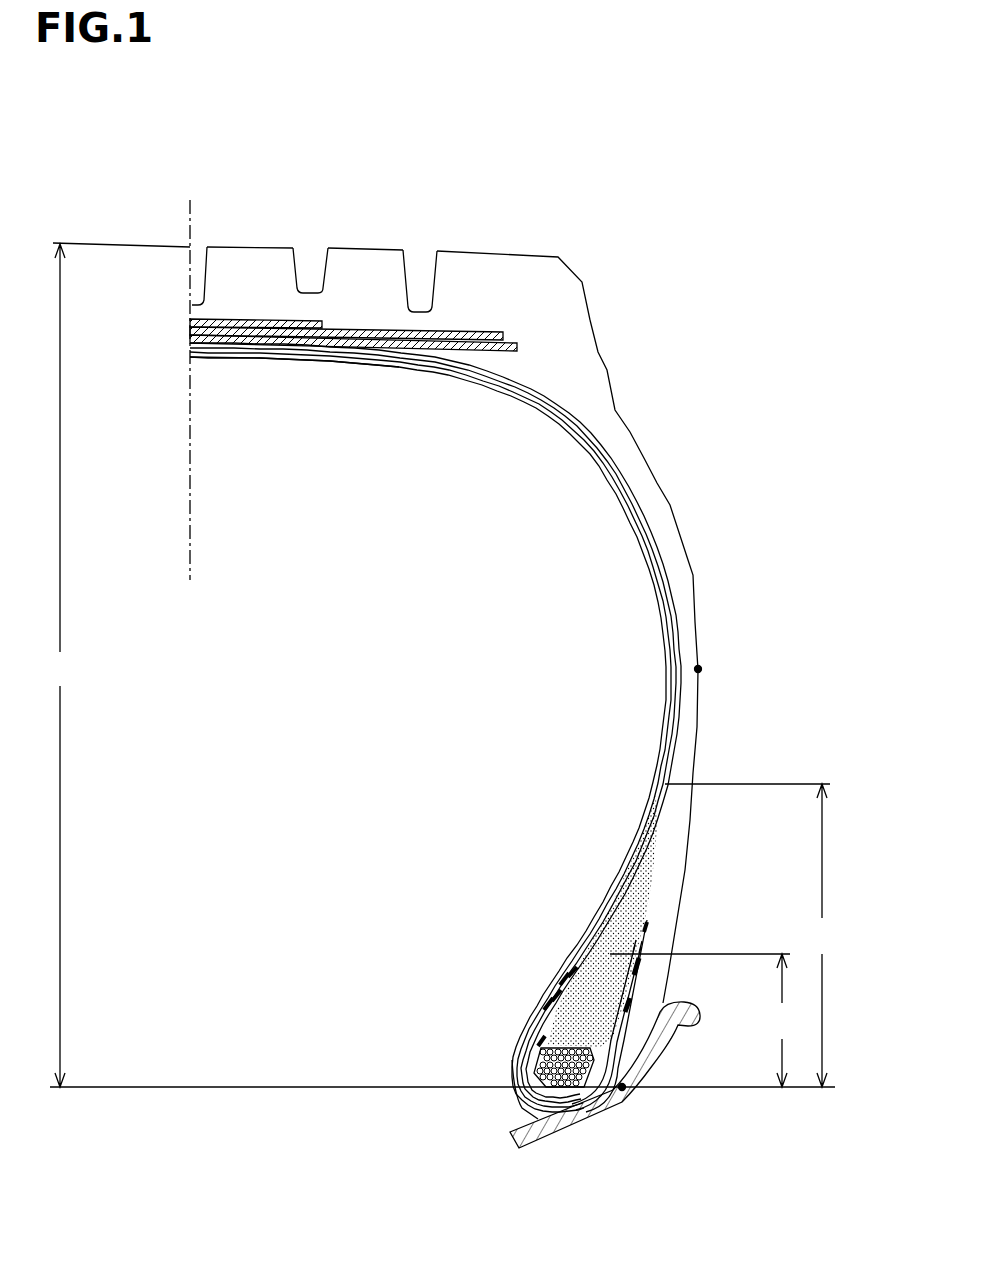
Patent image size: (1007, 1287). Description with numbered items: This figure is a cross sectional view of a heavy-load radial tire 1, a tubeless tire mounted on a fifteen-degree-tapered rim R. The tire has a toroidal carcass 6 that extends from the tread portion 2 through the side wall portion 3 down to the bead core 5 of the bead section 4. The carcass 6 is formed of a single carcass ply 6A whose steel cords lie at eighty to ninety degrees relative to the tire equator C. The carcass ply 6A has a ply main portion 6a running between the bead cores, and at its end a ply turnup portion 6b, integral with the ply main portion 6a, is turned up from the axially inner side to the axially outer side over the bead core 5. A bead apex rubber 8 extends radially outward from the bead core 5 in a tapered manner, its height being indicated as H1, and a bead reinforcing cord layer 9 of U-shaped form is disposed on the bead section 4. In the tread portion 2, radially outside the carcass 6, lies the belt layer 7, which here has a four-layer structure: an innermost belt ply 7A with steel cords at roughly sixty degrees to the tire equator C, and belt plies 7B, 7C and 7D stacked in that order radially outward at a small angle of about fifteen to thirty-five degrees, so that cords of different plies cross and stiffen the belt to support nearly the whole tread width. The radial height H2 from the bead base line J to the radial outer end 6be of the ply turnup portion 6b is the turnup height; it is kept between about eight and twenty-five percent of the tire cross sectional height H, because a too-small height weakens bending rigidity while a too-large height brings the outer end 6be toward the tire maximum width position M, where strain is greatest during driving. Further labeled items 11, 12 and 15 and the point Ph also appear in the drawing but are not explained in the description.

The heavy-load radial tire 1 is at (576, 194).
The tread portion 2 is at (474, 217).
The side wall portion 3 is at (710, 502).
The bead section 4 is at (494, 1062).
The bead core 5 is at (545, 1050).
The carcass 6 is at (475, 727).
The carcass ply 6A is at (468, 675).
The ply main portion 6a is at (672, 697).
The ply turnup portion 6b is at (612, 945).
The radial outer end of the ply turnup portion 6be is at (635, 937).
The belt layer 7 is at (112, 275).
The innermost belt ply 7A is at (190, 352).
The belt ply 7B is at (190, 340).
The belt ply 7C is at (190, 331).
The belt ply 7D is at (190, 322).
The bead apex rubber 8 is at (446, 910).
The bead reinforcing cord layer 9 is at (600, 1056).
The inner reinforcing ply 11 is at (562, 1000).
The outer reinforcing ply 12 is at (570, 978).
The clinch rubber 15 is at (645, 995).
The tire equator C is at (190, 373).
The tire cross sectional height H is at (59, 665).
The height of bead apex rubber H1 is at (755, 935).
The turnup height H2 is at (706, 1020).
The tire maximum width position M is at (721, 658).
The bead heel point Ph is at (622, 1090).
The bead base line J is at (723, 1088).
The rim R is at (568, 1123).